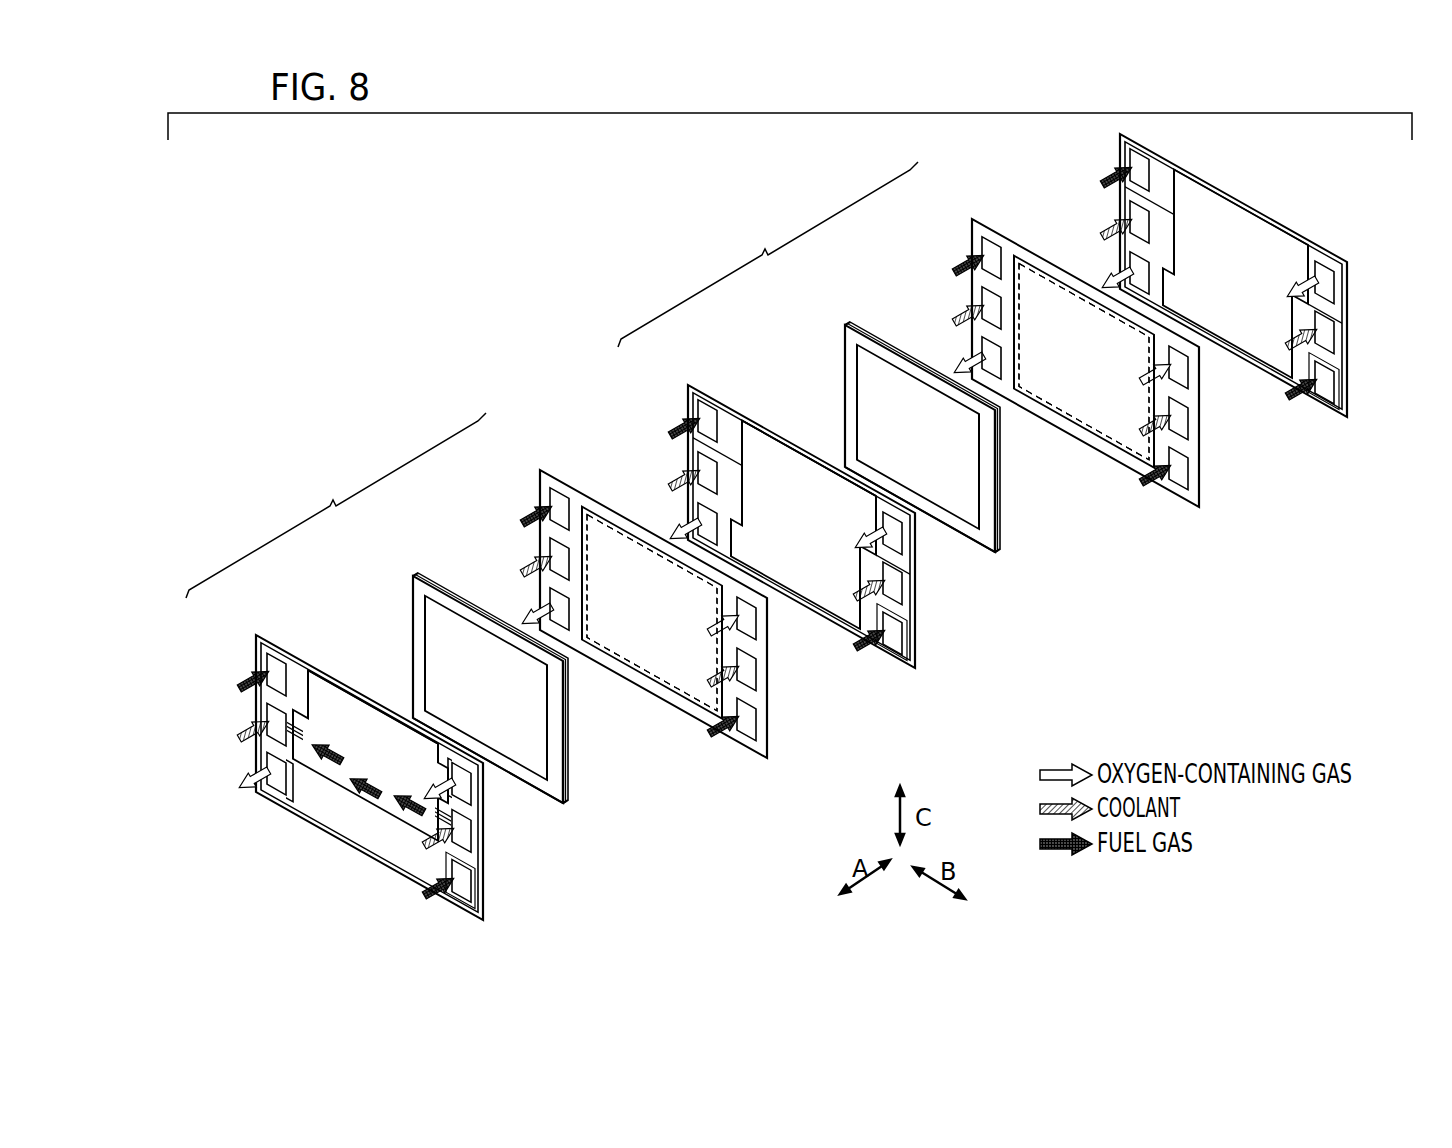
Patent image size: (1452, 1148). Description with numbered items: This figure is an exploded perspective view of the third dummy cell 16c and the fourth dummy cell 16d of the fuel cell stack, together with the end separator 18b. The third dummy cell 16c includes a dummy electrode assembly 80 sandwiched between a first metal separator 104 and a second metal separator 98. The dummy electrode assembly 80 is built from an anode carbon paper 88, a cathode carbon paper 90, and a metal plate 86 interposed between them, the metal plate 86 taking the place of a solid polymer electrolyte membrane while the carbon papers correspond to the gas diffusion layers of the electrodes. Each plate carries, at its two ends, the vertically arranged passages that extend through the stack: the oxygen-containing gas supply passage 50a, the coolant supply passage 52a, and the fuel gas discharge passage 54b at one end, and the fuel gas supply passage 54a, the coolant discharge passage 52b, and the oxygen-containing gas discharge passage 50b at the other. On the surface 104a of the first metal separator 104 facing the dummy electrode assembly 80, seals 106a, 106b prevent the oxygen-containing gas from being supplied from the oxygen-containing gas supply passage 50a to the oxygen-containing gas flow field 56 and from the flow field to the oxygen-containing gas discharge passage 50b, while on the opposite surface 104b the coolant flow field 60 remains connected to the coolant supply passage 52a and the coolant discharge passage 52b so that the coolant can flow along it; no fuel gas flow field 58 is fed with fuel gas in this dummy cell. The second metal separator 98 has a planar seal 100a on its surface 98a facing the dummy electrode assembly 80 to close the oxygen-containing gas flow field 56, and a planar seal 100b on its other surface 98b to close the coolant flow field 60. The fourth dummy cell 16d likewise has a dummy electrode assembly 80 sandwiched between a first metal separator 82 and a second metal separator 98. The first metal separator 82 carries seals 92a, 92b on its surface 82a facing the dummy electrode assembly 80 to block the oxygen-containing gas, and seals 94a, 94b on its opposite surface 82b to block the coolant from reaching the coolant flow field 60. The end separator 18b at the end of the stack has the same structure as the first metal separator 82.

The third dummy cell 16c is at (336, 505).
The fourth dummy cell 16d is at (768, 254).
The end separator 18b is at (1348, 421).
The oxygen-containing gas supply passage 50a is at (483, 810).
The oxygen-containing gas discharge passage 50b is at (270, 790).
The coolant supply passage 52a is at (470, 845).
The coolant discharge passage 52b is at (265, 707).
The fuel gas supply passage 54a is at (265, 660).
The fuel gas discharge passage 54b is at (438, 888).
The oxygen-containing gas flow field 56 is at (622, 630).
The fuel gas flow field 58 is at (372, 740).
The coolant flow field 60 is at (333, 715).
The dummy electrode assembly 80 is at (416, 574).
The first metal separator 82 is at (688, 385).
The surface of first metal separator facing dummy electrode assembly 82a is at (920, 652).
The surface of first metal separator opposite to dummy electrode assembly 82b is at (905, 620).
The metal plate 86 is at (562, 797).
The anode carbon paper 88 is at (530, 780).
The cathode carbon paper 90 is at (572, 778).
The seal 92a is at (883, 517).
The seal 92b is at (700, 512).
The seal 94a is at (902, 565).
The seal 94b is at (730, 477).
The second metal separator 98 is at (540, 470).
The surface of second metal separator facing dummy electrode assembly 98a is at (748, 718).
The other surface of second metal separator 98b is at (748, 742).
The planar seal 100a is at (590, 518).
The planar seal 100b is at (614, 518).
The first metal separator 104 is at (254, 633).
The surface of first metal separator facing dummy electrode assembly 104a is at (484, 903).
The surface of first metal separator 104b is at (478, 870).
The seal 106a is at (445, 767).
The seal 106b is at (262, 765).